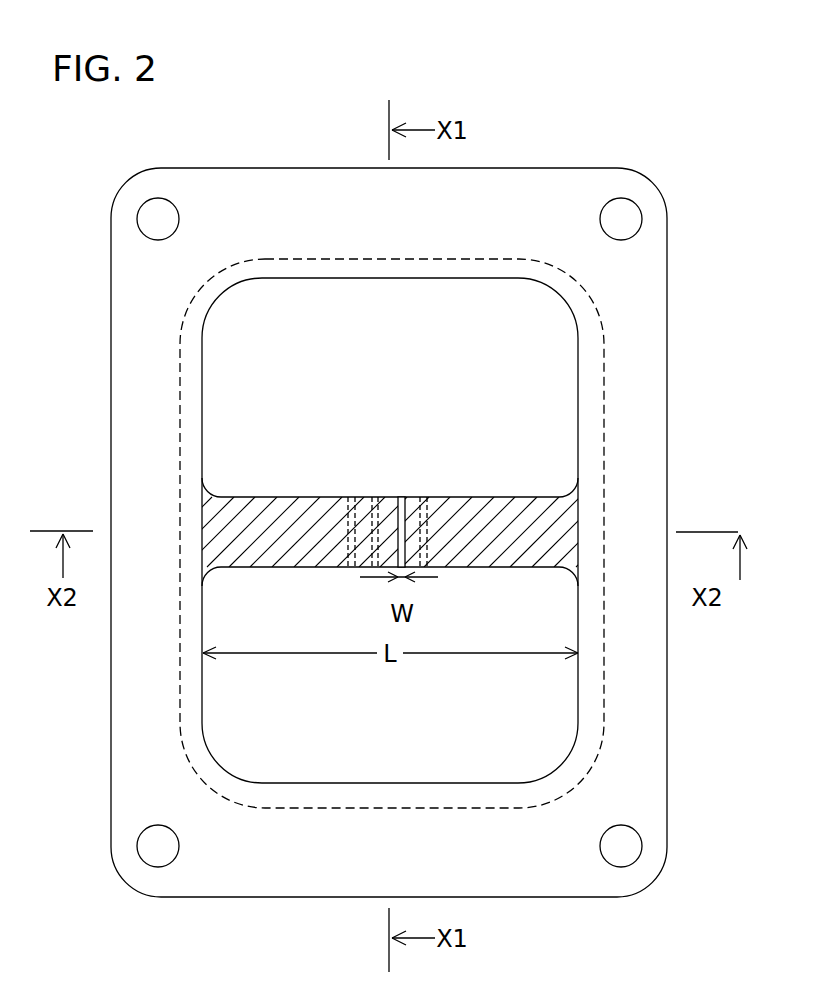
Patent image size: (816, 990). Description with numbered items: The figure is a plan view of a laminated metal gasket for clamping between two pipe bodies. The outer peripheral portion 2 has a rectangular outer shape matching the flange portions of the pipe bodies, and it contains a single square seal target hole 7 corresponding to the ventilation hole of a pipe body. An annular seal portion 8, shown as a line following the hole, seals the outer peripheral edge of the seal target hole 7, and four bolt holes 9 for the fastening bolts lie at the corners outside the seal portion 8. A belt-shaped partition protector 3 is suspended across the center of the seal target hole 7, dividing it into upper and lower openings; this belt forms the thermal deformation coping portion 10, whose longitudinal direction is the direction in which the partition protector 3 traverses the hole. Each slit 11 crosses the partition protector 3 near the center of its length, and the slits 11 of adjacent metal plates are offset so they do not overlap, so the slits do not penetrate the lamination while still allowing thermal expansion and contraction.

The outer peripheral portion 2 is at (648, 428).
The partition protector 3 is at (492, 562).
The seal target hole 7 is at (426, 280).
The seal portion 8 is at (362, 268).
The bolt holes 9 is at (146, 230).
The thermal deformation coping portion 10 is at (292, 503).
The slit 11 is at (364, 497).